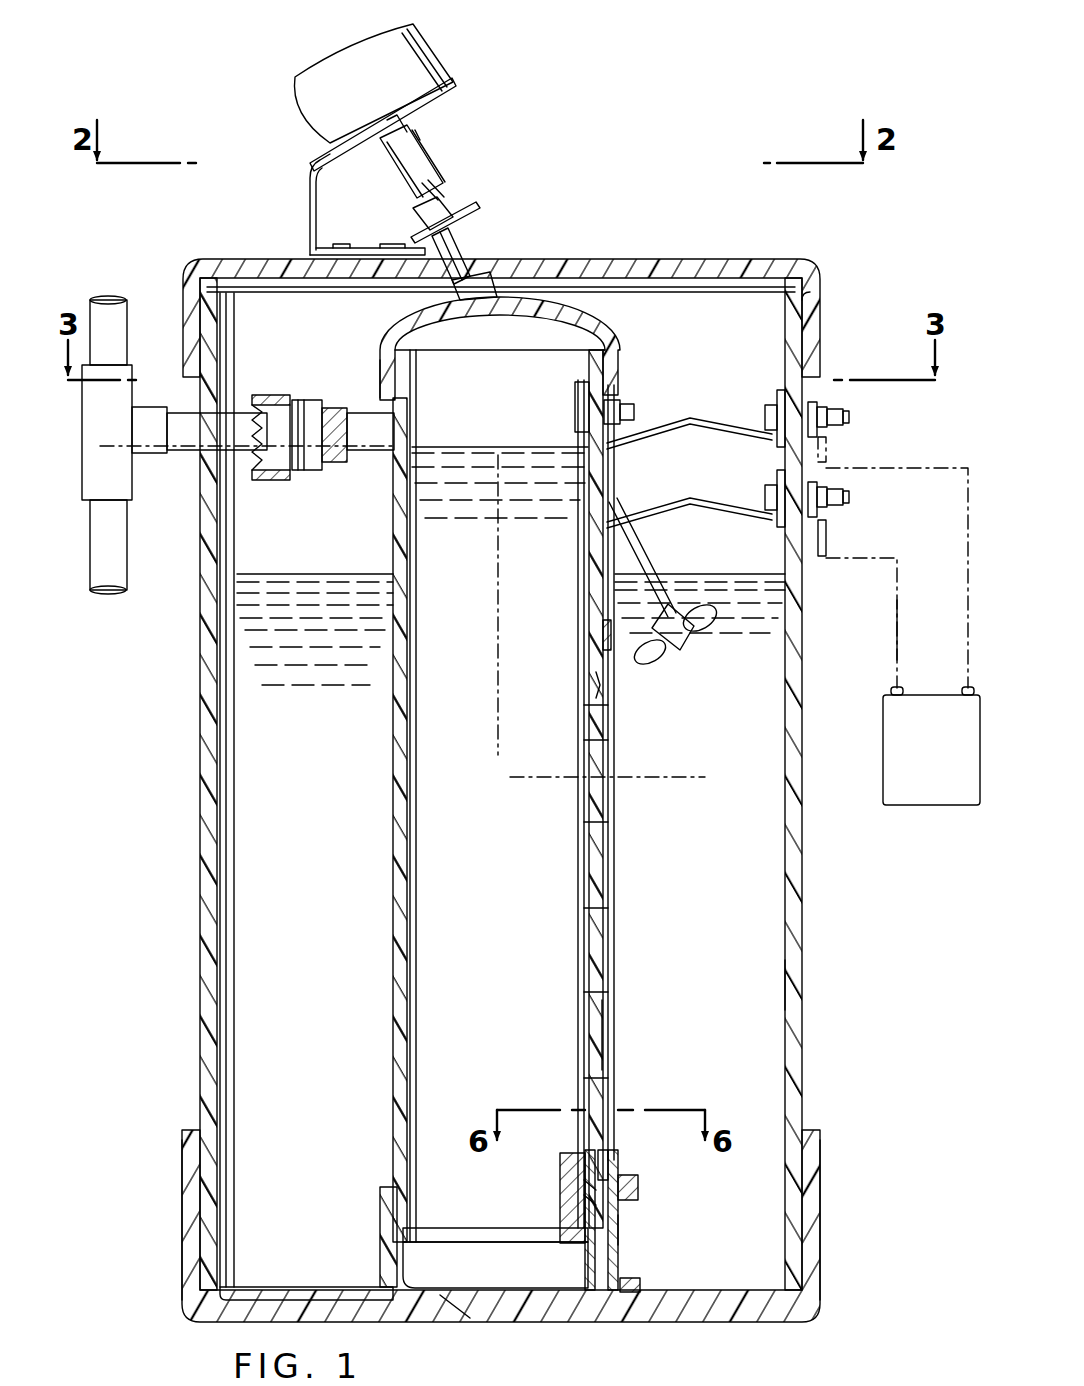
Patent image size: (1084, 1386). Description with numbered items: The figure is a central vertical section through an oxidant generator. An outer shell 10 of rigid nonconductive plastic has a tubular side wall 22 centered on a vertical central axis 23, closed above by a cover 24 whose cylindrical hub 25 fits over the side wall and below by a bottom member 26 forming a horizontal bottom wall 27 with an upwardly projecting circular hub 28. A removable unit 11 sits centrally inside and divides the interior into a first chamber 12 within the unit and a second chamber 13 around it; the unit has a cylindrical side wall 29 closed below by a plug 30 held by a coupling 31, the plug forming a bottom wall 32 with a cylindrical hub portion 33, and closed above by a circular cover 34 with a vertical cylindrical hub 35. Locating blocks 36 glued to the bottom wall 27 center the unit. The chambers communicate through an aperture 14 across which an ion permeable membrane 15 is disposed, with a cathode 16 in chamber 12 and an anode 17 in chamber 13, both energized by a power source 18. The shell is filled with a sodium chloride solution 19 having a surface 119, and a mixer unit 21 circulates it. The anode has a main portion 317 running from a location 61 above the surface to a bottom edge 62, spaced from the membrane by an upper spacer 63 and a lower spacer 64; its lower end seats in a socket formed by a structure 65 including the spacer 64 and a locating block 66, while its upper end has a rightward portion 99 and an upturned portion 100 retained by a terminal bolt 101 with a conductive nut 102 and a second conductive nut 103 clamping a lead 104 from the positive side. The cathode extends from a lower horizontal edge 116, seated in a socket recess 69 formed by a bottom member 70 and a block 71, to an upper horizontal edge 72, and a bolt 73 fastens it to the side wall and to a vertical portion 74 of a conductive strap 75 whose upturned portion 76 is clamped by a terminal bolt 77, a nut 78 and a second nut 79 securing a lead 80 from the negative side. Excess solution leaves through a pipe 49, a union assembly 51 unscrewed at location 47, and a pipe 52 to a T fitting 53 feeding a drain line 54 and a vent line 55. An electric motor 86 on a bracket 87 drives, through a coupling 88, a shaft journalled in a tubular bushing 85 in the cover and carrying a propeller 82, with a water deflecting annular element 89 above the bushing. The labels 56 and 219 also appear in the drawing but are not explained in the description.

The outer shell 10 is at (805, 1078).
The removable unit 11 is at (390, 1062).
The first chamber 12 is at (500, 401).
The second chamber 13 is at (315, 609).
The aperture 14 is at (594, 690).
The ion permeable membrane 15 is at (606, 842).
The cathode 16 is at (580, 946).
The anode 17 is at (612, 932).
The power source 18 is at (920, 800).
The sodium chloride solution 19 is at (265, 636).
The mixer unit 21 is at (488, 215).
The tubular side wall 22 is at (802, 994).
The vertical central axis 23 is at (496, 606).
The cover 24 is at (562, 260).
The cylindrical hub 25 is at (812, 300).
The bottom member 26 is at (178, 1262).
The horizontal bottom wall 27 is at (540, 1315).
The circular hub 28 is at (822, 1147).
The side wall 29 is at (393, 818).
The plug 30 is at (445, 1296).
The coupling 31 is at (377, 1216).
The horizontal bottom wall 32 is at (500, 1288).
The cylindrical hub portion 33 is at (404, 1256).
The circular cover 34 is at (600, 325).
The vertical cylindrical hub 35 is at (385, 362).
The locating blocks 36 is at (640, 1285).
The union unscrewing location 47 is at (300, 472).
The PVC pipe 49 is at (376, 450).
The union assembly 51 is at (300, 395).
The pipe 52 is at (188, 448).
The T fitting 53 is at (112, 400).
The drain line 54 is at (120, 575).
The vent line 55 is at (115, 300).
The center line 56 is at (648, 776).
The upper location 61 is at (618, 512).
The bottom edge 62 is at (618, 1210).
The upper spacer 63 is at (600, 636).
The lower spacer 64 is at (608, 1162).
The socket structure 65 is at (672, 1173).
The locating block 66 is at (638, 1188).
The socket recess 69 is at (590, 1196).
The bottom member 70 is at (584, 1264).
The block 71 is at (562, 1160).
The upper horizontal edge 72 is at (582, 392).
The bolt 73 is at (578, 422).
The vertically extending portion 74 is at (612, 400).
The conductive strap 75 is at (666, 420).
The upwardly turned portion 76 is at (776, 405).
The terminal bolt 77 is at (764, 422).
The nut 78 is at (812, 400).
The second nut 79 is at (845, 418).
The lead 80 is at (828, 455).
The propeller 82 is at (680, 658).
The tubular bushing 85 is at (458, 250).
The electric motor 86 is at (300, 92).
The bracket 87 is at (308, 196).
The coupling 88 is at (412, 152).
The water deflecting annular element 89 is at (442, 214).
The rightwardly extending portion 99 is at (700, 505).
The upwardly turned portion 100 is at (776, 500).
The terminal bolt 101 is at (845, 512).
The conductive nut 102 is at (818, 548).
The second conductive nut 103 is at (840, 500).
The lead 104 is at (895, 628).
The lower horizontal edge 116 is at (582, 1187).
The surface 119 is at (662, 574).
The liquid 219 is at (448, 450).
The main portion 317 is at (610, 1036).